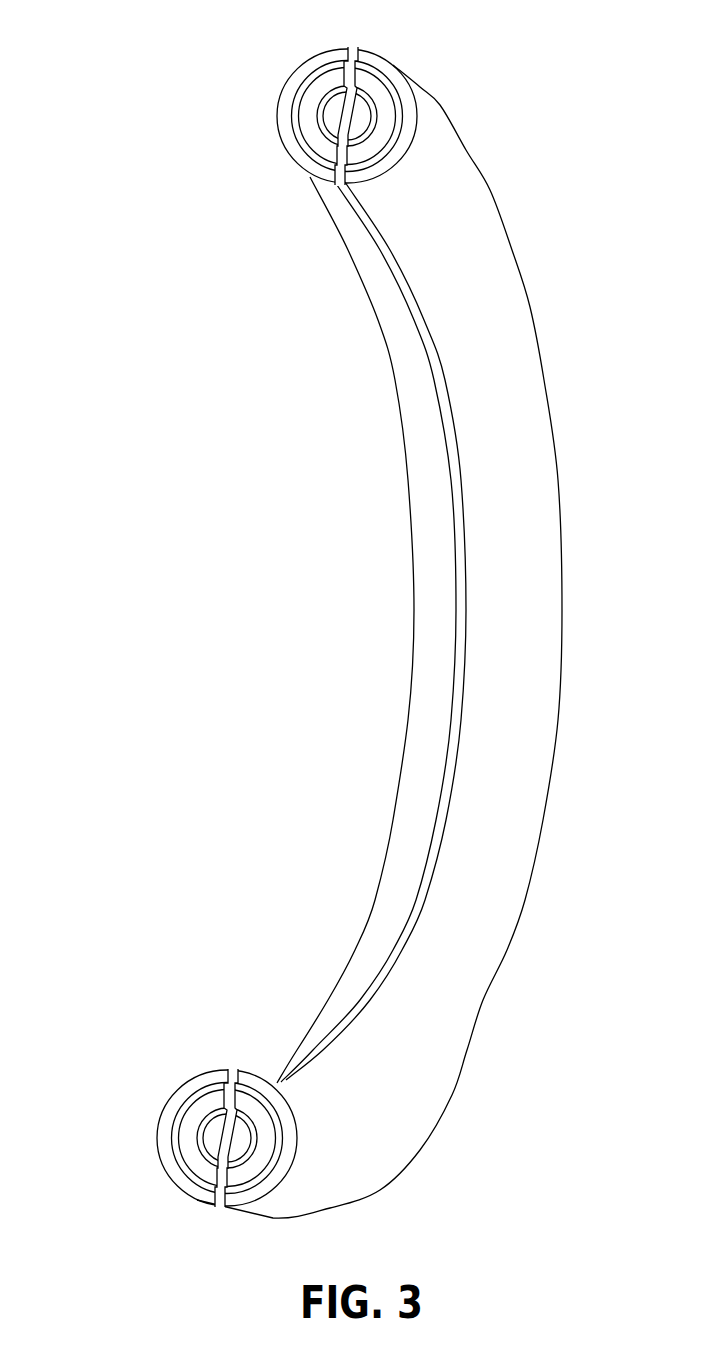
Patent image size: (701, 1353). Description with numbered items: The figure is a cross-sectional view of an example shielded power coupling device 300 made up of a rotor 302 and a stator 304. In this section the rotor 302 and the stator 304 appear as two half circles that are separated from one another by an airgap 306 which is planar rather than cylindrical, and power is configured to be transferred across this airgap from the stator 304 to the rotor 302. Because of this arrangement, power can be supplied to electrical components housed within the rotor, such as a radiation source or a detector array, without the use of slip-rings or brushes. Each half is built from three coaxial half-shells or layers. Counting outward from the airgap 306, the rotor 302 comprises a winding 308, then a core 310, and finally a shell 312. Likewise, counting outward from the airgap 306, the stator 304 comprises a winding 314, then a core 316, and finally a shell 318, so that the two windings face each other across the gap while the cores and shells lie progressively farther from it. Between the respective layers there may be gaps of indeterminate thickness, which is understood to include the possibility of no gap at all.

The shielded power coupling device 300 is at (106, 37).
The rotor 302 is at (465, 100).
The stator 304 is at (275, 67).
The airgap 306 is at (356, 36).
The winding 308 is at (359, 120).
The core 310 is at (373, 140).
The shell 312 is at (380, 163).
The winding 314 is at (330, 113).
The core 316 is at (312, 135).
The shell 318 is at (293, 150).